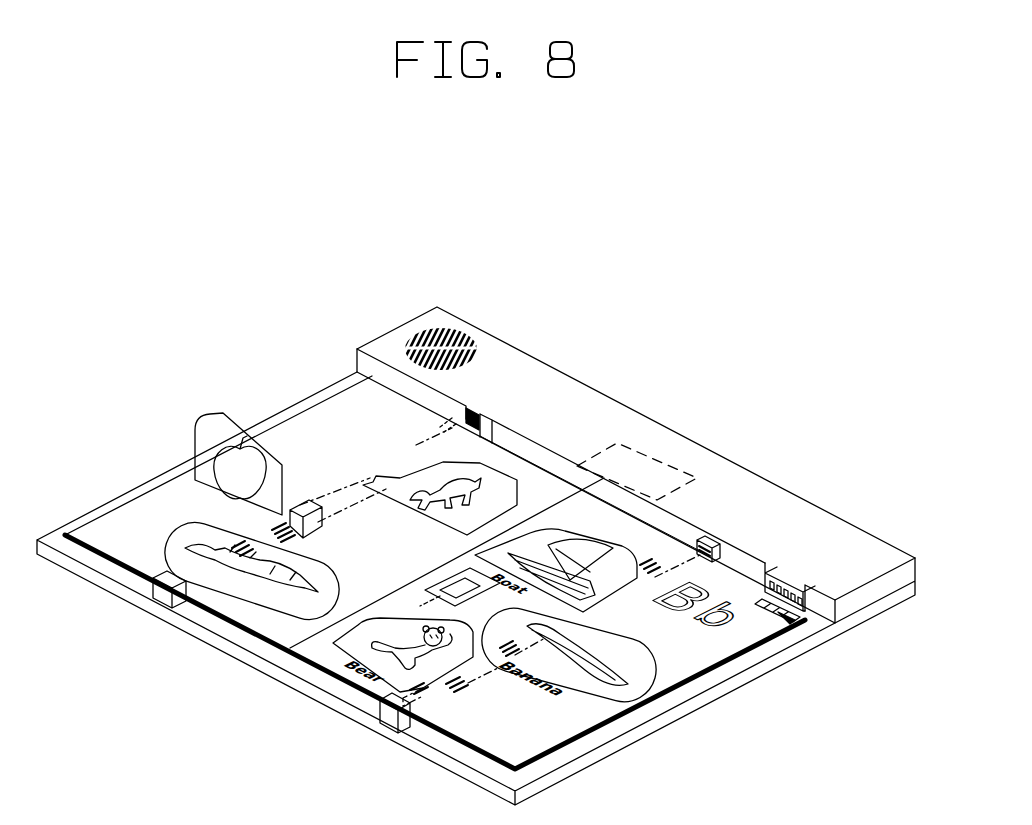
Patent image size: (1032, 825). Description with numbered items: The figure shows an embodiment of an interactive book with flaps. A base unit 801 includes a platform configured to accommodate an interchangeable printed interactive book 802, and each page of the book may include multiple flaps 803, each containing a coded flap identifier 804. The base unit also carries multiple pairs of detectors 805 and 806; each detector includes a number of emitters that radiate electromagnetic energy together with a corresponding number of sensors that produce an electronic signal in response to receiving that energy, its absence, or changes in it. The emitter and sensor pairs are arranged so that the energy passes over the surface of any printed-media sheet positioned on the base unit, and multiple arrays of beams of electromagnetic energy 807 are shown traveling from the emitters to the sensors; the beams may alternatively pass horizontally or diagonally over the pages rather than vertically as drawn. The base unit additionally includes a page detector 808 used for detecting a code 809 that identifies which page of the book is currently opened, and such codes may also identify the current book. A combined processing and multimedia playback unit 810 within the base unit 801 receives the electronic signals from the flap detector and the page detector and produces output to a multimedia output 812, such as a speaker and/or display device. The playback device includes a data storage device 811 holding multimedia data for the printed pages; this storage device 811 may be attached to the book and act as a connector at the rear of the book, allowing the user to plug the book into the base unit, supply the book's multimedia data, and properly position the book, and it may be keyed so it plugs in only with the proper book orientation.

The base unit 801 is at (373, 343).
The interchangeable printed interactive book 802 is at (332, 412).
The flap 803 is at (212, 430).
The coded flap identifier 804 is at (294, 513).
The detector 805 is at (155, 597).
The detector 806 is at (473, 413).
The beams of electromagnetic energy 807 is at (220, 523).
The page detector 808 is at (788, 583).
The code 809 is at (797, 628).
The combined processing and multimedia playback unit 810 is at (643, 470).
The data storage device 811 is at (483, 580).
The multimedia output 812 is at (445, 332).